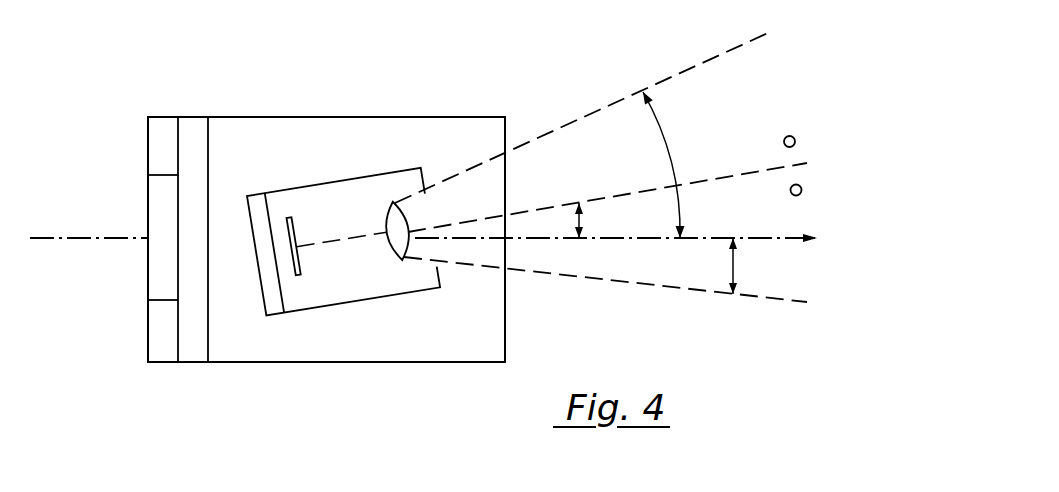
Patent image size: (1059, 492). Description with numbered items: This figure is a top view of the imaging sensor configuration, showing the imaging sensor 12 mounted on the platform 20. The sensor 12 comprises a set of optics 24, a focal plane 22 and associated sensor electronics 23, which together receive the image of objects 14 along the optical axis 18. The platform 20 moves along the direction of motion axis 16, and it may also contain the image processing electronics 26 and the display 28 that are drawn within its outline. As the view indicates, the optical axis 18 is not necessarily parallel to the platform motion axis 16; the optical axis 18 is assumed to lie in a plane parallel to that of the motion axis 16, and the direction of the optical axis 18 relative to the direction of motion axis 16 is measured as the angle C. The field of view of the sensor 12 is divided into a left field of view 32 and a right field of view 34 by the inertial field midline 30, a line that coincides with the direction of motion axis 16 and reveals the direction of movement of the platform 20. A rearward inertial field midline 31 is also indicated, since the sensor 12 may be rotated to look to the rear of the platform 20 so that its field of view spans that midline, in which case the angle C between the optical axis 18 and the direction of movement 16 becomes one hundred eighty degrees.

The imaging sensor 12 is at (326, 223).
The objects 14 is at (795, 139).
The direction of motion axis 16 is at (616, 218).
The optical axis 18 is at (607, 200).
The platform 20 is at (412, 117).
The focal plane 22 is at (301, 268).
The sensor electronics 23 is at (258, 195).
The optics 24 is at (387, 212).
The image processing electronics 26 is at (193, 123).
The display 28 is at (160, 266).
The inertial field midline 30 is at (612, 237).
The inertial field midline 31 is at (85, 237).
The left field of view 32 is at (665, 139).
The right field of view 34 is at (737, 268).
The angle C is at (586, 220).